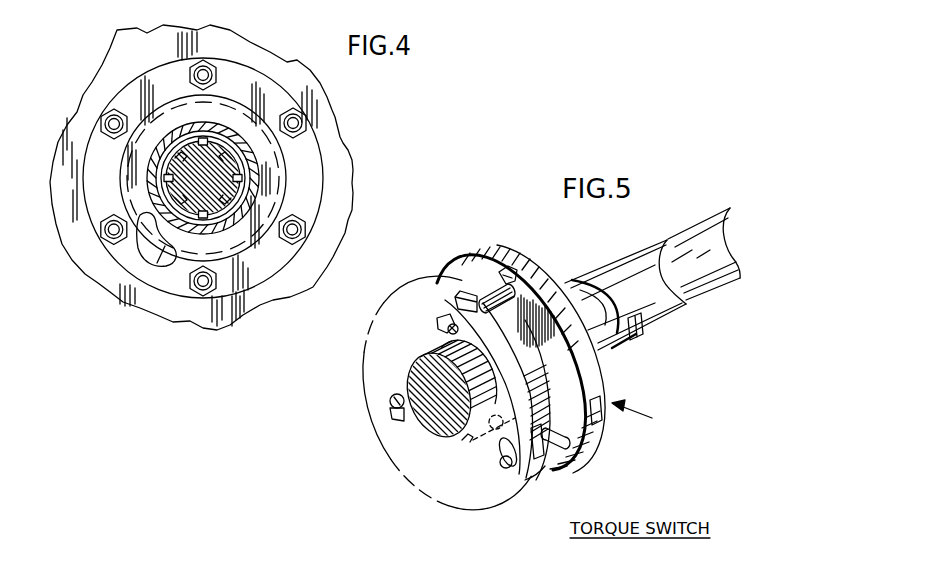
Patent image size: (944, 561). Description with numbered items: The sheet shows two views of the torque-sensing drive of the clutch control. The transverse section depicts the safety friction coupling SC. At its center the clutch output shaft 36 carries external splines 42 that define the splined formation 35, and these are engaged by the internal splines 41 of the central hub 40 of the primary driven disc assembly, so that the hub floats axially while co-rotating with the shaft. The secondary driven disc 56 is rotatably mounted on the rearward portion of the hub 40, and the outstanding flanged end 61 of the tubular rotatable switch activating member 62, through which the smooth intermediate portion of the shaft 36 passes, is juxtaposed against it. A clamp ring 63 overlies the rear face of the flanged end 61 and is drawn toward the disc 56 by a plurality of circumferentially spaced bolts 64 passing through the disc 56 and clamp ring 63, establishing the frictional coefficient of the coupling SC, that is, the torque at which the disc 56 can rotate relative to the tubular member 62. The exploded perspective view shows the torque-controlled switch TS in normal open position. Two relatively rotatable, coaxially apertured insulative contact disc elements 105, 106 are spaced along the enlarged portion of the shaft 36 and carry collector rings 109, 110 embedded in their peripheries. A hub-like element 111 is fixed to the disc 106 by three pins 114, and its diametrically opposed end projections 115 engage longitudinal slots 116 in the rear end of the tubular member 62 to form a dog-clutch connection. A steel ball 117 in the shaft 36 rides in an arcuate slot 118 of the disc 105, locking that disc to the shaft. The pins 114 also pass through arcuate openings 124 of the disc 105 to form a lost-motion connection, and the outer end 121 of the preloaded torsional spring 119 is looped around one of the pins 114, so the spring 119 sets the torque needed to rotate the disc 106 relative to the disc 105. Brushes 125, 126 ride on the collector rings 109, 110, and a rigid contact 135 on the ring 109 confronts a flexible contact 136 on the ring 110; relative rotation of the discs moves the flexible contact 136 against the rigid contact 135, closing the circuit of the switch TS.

In FIG. 4, the safety friction coupling SC is at (80, 141).
In FIG. 4, the secondary driven disc 56 is at (325, 104).
In FIG. 4, the clamp ring 63 is at (270, 265).
In FIG. 4, the bolts 64 is at (110, 116).
In FIG. 4, the splined formation 35 is at (223, 230).
In FIG. 4, the tubular rotatable switch activating member 62 is at (261, 182).
In FIG. 5, the tubular rotatable switch activating member 62 is at (643, 248).
In FIG. 4, the clutch output shaft 36 is at (213, 191).
In FIG. 5, the clutch output shaft 36 is at (437, 395).
In FIG. 4, the central hub 40 is at (173, 179).
In FIG. 4, the internal splines 41 is at (251, 176).
In FIG. 4, the external splines 42 is at (215, 178).
In FIG. 4, the flanged end 61 is at (151, 270).
In FIG. 5, the contact disc element 105 is at (372, 358).
In FIG. 5, the contact disc element 106 is at (449, 268).
In FIG. 5, the collector ring 110 is at (594, 363).
In FIG. 5, the hub-like element 111 is at (568, 283).
In FIG. 5, the pins 114 is at (449, 331).
In FIG. 5, the end projections 115 is at (633, 341).
In FIG. 5, the longitudinal slots 116 is at (635, 318).
In FIG. 5, the steel ball 117 is at (490, 440).
In FIG. 5, the arcuate slot 118 is at (464, 443).
In FIG. 5, the torsional spring 119 is at (542, 366).
In FIG. 5, the outer end of spring 121 is at (490, 290).
In FIG. 5, the arcuate openings 124 is at (437, 324).
In FIG. 5, the brush 125 is at (540, 466).
In FIG. 5, the brush 126 is at (600, 424).
In FIG. 5, the rigid contact 135 is at (455, 302).
In FIG. 5, the flexible contact 136 is at (514, 270).
In FIG. 5, the collector ring 109 is at (525, 480).
In FIG. 5, the torque-controlled switch TS is at (642, 413).